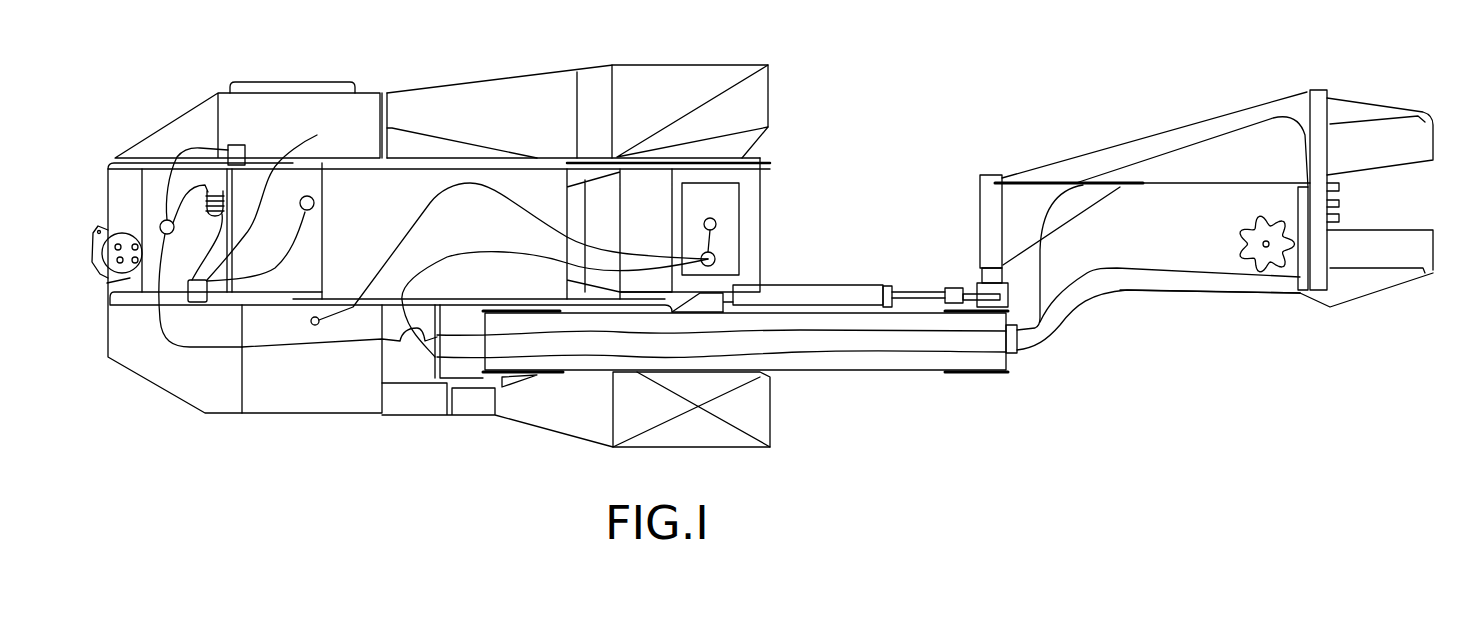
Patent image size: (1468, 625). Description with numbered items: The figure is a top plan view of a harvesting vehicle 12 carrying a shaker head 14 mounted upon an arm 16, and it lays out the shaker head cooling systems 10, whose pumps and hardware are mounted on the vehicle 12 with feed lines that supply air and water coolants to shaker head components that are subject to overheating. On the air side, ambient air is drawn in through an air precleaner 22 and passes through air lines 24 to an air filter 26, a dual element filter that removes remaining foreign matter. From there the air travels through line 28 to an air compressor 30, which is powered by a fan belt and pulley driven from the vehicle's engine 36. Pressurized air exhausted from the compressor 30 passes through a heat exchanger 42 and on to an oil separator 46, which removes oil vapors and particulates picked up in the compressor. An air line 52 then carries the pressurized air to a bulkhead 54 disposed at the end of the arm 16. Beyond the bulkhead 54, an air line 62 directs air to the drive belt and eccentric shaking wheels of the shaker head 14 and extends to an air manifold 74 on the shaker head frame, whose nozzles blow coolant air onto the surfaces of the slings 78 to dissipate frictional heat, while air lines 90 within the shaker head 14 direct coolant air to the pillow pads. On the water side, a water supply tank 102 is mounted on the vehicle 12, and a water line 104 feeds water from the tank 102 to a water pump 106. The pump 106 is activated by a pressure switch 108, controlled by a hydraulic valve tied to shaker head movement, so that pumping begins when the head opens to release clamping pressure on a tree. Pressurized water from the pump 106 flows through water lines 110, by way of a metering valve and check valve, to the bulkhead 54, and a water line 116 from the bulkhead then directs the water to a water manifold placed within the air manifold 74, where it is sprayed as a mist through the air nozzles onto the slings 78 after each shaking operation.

The shaker head cooling systems 10 is at (925, 222).
The harvesting vehicle 12 is at (678, 73).
The shaker head 14 is at (1200, 254).
The arm 16 is at (932, 368).
The air precleaner 22 is at (313, 200).
The air lines 24 is at (303, 232).
The air filter 26 is at (193, 302).
The line 28 is at (251, 181).
The air compressor 30 is at (247, 136).
The engine 36 is at (313, 265).
The heat exchanger 42 is at (198, 232).
The oil separator 46 is at (160, 224).
The air line 52 is at (293, 343).
The bulkhead 54 is at (1013, 350).
The air line 62 is at (1097, 270).
The air manifold 74 is at (1296, 217).
The slings 78 is at (1386, 169).
The air lines 90 is at (1220, 137).
The water supply tank 102 is at (733, 198).
The water line 104 is at (717, 228).
The water pump 106 is at (700, 252).
The pressure switch 108 is at (311, 325).
The water lines 110 is at (490, 262).
The water line 116 is at (1210, 293).